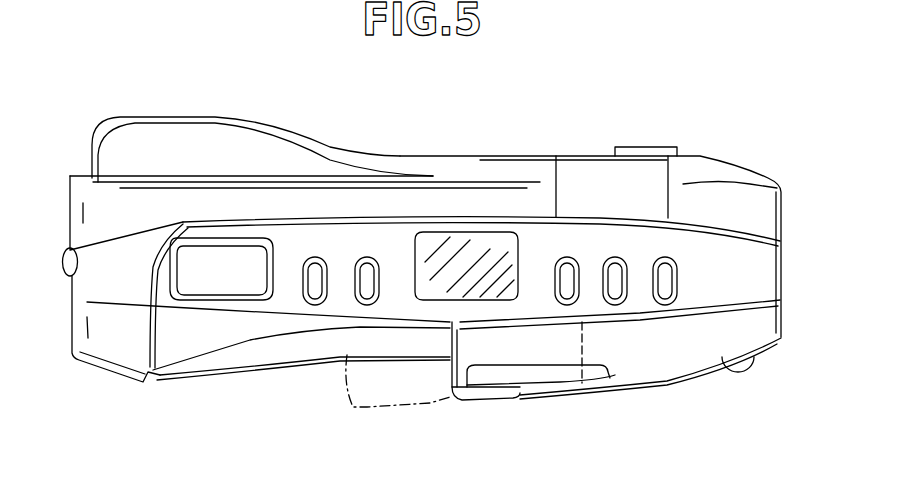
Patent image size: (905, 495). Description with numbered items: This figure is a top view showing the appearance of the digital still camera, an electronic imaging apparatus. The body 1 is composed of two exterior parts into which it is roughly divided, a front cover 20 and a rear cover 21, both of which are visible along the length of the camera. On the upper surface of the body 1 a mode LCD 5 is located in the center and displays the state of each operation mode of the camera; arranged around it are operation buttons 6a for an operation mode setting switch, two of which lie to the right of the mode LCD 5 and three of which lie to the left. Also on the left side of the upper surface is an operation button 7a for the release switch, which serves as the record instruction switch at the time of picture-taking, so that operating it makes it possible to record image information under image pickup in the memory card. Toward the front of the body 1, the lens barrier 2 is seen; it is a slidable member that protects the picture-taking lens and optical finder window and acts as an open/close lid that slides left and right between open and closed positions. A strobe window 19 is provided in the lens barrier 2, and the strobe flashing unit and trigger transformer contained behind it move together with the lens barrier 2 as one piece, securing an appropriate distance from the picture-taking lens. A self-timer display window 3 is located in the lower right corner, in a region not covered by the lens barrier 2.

The body 1 is at (723, 140).
The lens barrier 2 is at (450, 399).
The self-timer display window 3 is at (727, 375).
The mode LCD 5 is at (463, 250).
The operation buttons 6a is at (366, 257).
The operation button 7a is at (240, 283).
The strobe window 19 is at (495, 388).
The front cover 20 is at (110, 290).
The rear cover 21 is at (95, 212).